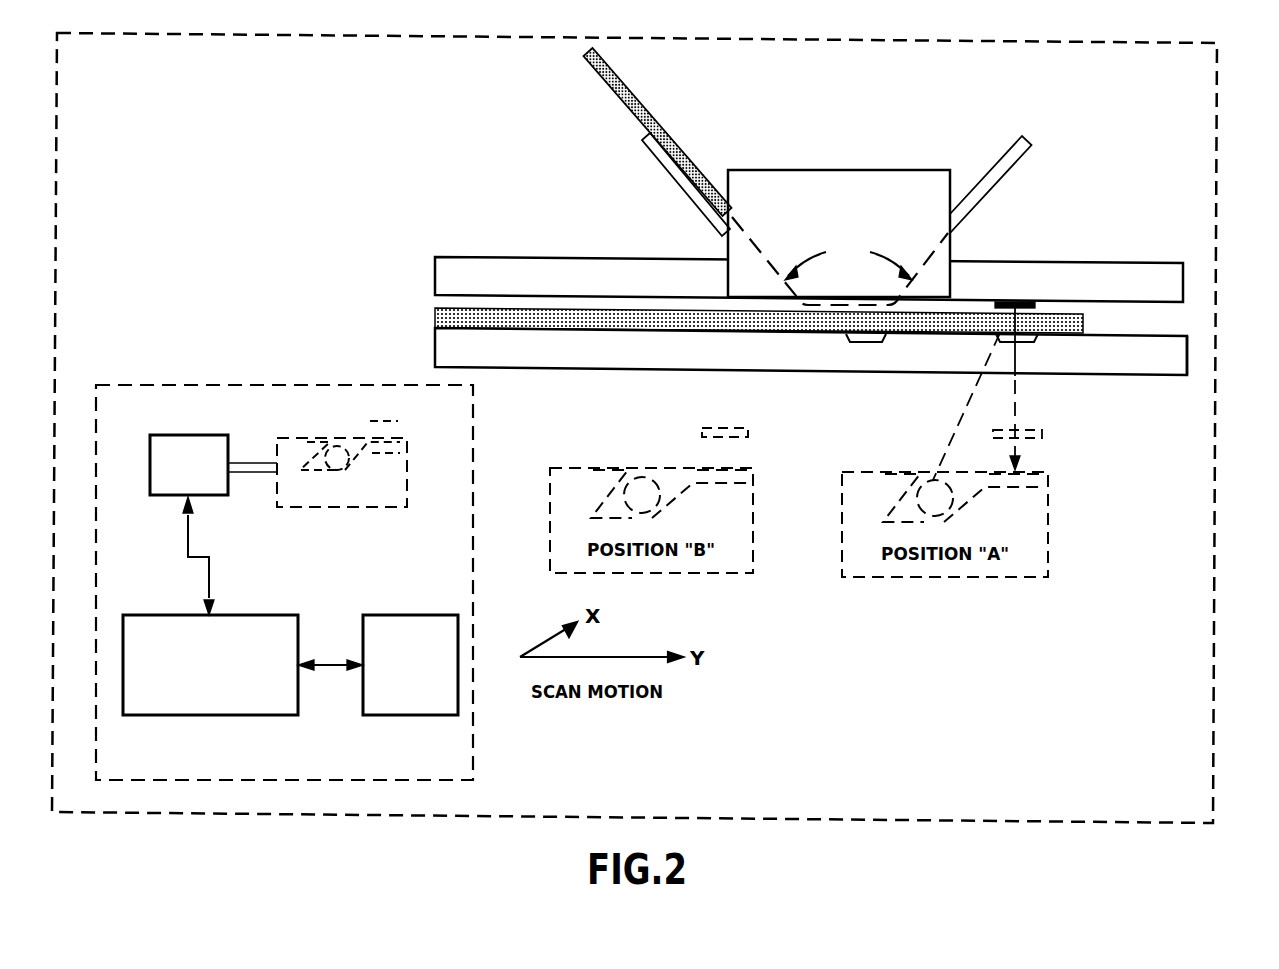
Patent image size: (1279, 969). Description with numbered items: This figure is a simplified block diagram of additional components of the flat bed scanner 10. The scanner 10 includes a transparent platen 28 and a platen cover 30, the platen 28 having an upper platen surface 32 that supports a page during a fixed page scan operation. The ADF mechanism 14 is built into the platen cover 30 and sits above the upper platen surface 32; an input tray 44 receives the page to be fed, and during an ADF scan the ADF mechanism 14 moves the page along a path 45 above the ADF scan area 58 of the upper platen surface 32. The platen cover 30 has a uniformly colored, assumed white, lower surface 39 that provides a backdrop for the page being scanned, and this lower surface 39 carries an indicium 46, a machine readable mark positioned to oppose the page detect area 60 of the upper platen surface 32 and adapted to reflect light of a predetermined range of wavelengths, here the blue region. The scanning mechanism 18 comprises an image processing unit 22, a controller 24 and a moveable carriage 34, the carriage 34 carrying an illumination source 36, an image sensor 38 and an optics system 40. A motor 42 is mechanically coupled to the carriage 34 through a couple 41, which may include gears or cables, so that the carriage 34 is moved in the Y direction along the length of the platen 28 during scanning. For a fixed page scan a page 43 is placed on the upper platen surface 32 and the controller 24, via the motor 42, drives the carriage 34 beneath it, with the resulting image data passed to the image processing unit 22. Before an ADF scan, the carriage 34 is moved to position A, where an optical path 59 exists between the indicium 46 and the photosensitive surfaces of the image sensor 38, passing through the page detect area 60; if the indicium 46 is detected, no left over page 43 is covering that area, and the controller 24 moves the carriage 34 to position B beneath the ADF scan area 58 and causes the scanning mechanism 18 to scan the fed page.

The flat bed scanner 10 is at (1219, 108).
The ADF mechanism 14 is at (859, 218).
The scanning mechanism 18 is at (426, 756).
The image processing unit 22 is at (423, 670).
The controller 24 is at (223, 670).
The transparent platen 28 is at (536, 360).
The platen cover 30 is at (662, 290).
The upper platen surface 32 is at (1174, 334).
The moveable carriage 34 is at (358, 504).
The illumination source 36 is at (341, 446).
The image sensor 38 is at (405, 445).
The lower surface 39 is at (646, 100).
The optics system 40 is at (398, 421).
The couple 41 is at (253, 476).
The motor 42 is at (202, 476).
The page 43 is at (435, 317).
The input tray 44 is at (680, 190).
The path 45 is at (848, 258).
The indicium 46 is at (1015, 289).
The ADF scan area 58 is at (852, 340).
The optical path 59 is at (1017, 408).
The page detect area 60 is at (1020, 342).